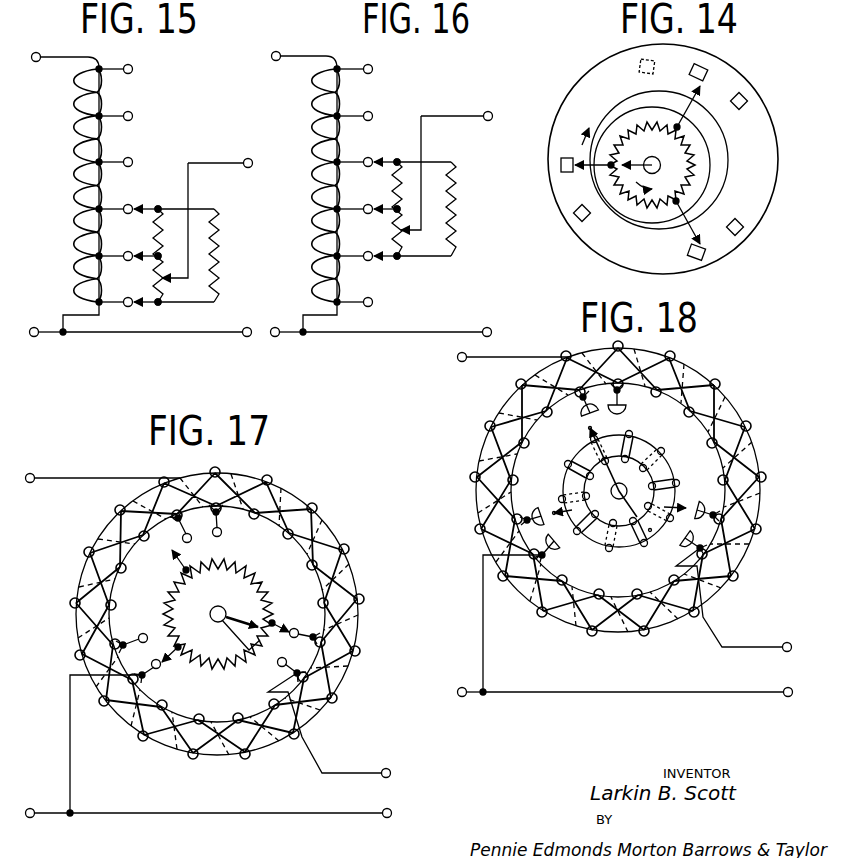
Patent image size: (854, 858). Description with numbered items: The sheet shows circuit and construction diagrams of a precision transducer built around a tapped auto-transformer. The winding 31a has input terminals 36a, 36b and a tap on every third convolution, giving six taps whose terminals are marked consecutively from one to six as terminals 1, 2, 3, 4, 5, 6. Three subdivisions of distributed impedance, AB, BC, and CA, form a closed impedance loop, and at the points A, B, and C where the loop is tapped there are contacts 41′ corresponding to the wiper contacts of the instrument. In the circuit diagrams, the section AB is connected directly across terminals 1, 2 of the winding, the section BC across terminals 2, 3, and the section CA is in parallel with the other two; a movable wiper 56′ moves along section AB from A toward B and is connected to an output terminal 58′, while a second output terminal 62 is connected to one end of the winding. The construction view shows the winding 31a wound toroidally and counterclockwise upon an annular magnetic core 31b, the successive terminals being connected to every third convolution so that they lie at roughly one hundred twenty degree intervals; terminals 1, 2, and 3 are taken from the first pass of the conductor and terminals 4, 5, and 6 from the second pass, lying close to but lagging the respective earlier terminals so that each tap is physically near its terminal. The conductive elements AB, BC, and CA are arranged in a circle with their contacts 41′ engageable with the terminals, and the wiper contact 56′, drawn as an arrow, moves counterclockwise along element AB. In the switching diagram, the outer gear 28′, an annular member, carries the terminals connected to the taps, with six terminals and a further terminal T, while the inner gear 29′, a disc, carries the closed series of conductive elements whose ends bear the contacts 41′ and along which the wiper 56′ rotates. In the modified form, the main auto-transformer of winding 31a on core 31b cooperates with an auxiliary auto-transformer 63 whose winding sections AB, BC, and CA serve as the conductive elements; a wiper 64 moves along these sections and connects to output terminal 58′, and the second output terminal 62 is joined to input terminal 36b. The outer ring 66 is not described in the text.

In FIG. 14, the outer gear 28′ is at (763, 178).
In FIG. 14, the inner gear 29′ is at (704, 163).
In FIG. 15, the winding 31a is at (76, 186).
In FIG. 16, the winding 31a is at (318, 233).
In FIG. 17, the winding 31a is at (225, 473).
In FIG. 18, the winding 31a is at (669, 358).
In FIG. 17, the annular magnetic core 31b is at (290, 489).
In FIG. 18, the annular magnetic core 31b is at (722, 403).
In FIG. 15, the input terminal 36a is at (33, 52).
In FIG. 16, the input terminal 36a is at (278, 52).
In FIG. 17, the input terminal 36a is at (27, 474).
In FIG. 18, the input terminal 36a is at (461, 362).
In FIG. 15, the input terminal 36b is at (36, 337).
In FIG. 16, the input terminal 36b is at (277, 337).
In FIG. 17, the input terminal 36b is at (46, 790).
In FIG. 18, the input terminal 36b is at (461, 698).
In FIG. 15, the contacts 41′ is at (140, 206).
In FIG. 16, the contacts 41′ is at (378, 158).
In FIG. 14, the contacts 41′ is at (702, 100).
In FIG. 17, the contacts 41′ is at (179, 550).
In FIG. 15, the wiper contact 56′ is at (187, 281).
In FIG. 16, the wiper contact 56′ is at (409, 234).
In FIG. 14, the wiper contact 56′ is at (630, 162).
In FIG. 17, the wiper contact 56′ is at (242, 612).
In FIG. 15, the output terminal 58′ is at (251, 160).
In FIG. 16, the output terminal 58′ is at (490, 121).
In FIG. 17, the output terminal 58′ is at (391, 773).
In FIG. 18, the output terminal 58′ is at (800, 636).
In FIG. 15, the second output terminal 62 is at (247, 337).
In FIG. 16, the second output terminal 62 is at (492, 333).
In FIG. 17, the second output terminal 62 is at (392, 814).
In FIG. 18, the second output terminal 62 is at (787, 698).
In FIG. 18, the auxiliary auto-transformer 63 is at (676, 466).
In FIG. 18, the wiper 64 is at (612, 480).
In FIG. 17, the outer ring 66 is at (358, 630).
In FIG. 14, the terminal T is at (641, 61).
In FIG. 15, the terminal 1 is at (115, 294).
In FIG. 16, the terminal 1 is at (354, 294).
In FIG. 14, the terminal 1 is at (579, 216).
In FIG. 17, the terminal 1 is at (148, 674).
In FIG. 18, the terminal 1 is at (551, 550).
In FIG. 15, the terminal 2 is at (115, 248).
In FIG. 16, the terminal 2 is at (353, 248).
In FIG. 14, the terminal 2 is at (741, 225).
In FIG. 17, the terminal 2 is at (305, 630).
In FIG. 18, the terminal 2 is at (707, 506).
In FIG. 15, the terminal 3 is at (115, 201).
In FIG. 16, the terminal 3 is at (353, 201).
In FIG. 14, the terminal 3 is at (696, 65).
In FIG. 17, the terminal 3 is at (179, 527).
In FIG. 18, the terminal 3 is at (581, 405).
In FIG. 15, the terminal 4 is at (115, 154).
In FIG. 16, the terminal 4 is at (353, 154).
In FIG. 14, the terminal 4 is at (560, 165).
In FIG. 17, the terminal 4 is at (132, 635).
In FIG. 18, the terminal 4 is at (531, 512).
In FIG. 15, the terminal 5 is at (115, 108).
In FIG. 16, the terminal 5 is at (354, 108).
In FIG. 14, the terminal 5 is at (692, 259).
In FIG. 17, the terminal 5 is at (290, 671).
In FIG. 18, the terminal 5 is at (693, 547).
In FIG. 15, the terminal 6 is at (115, 61).
In FIG. 16, the terminal 6 is at (354, 61).
In FIG. 14, the terminal 6 is at (745, 103).
In FIG. 17, the terminal 6 is at (221, 521).
In FIG. 18, the terminal 6 is at (622, 399).
In FIG. 15, the tap point A is at (166, 295).
In FIG. 16, the tap point A is at (403, 154).
In FIG. 14, the tap point A is at (606, 173).
In FIG. 17, the tap point A is at (175, 656).
In FIG. 18, the tap point A is at (578, 433).
In FIG. 15, the tap point B is at (166, 249).
In FIG. 16, the tap point B is at (404, 248).
In FIG. 14, the tap point B is at (686, 202).
In FIG. 17, the tap point B is at (278, 616).
In FIG. 18, the tap point B is at (550, 502).
In FIG. 15, the tap point C is at (164, 201).
In FIG. 16, the tap point C is at (404, 201).
In FIG. 14, the tap point C is at (684, 128).
In FIG. 17, the tap point C is at (178, 567).
In FIG. 18, the tap point C is at (662, 532).